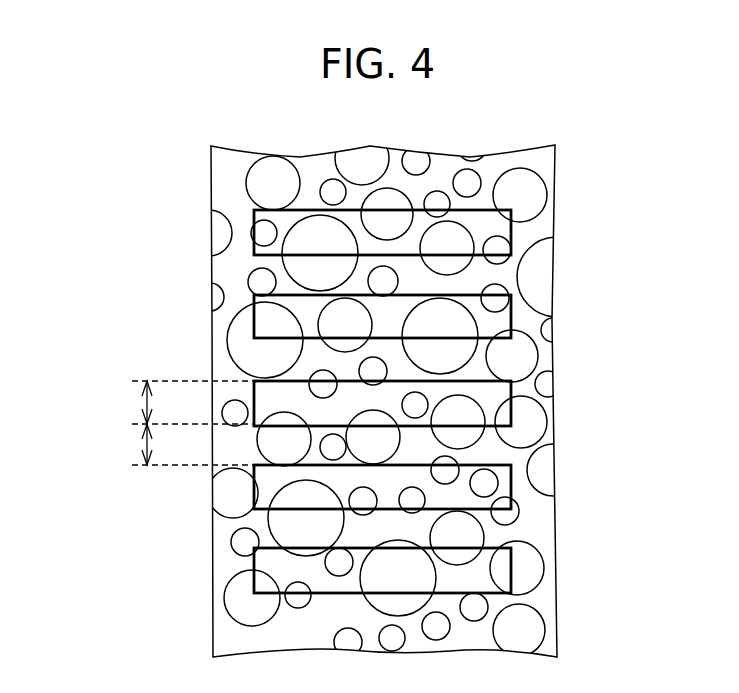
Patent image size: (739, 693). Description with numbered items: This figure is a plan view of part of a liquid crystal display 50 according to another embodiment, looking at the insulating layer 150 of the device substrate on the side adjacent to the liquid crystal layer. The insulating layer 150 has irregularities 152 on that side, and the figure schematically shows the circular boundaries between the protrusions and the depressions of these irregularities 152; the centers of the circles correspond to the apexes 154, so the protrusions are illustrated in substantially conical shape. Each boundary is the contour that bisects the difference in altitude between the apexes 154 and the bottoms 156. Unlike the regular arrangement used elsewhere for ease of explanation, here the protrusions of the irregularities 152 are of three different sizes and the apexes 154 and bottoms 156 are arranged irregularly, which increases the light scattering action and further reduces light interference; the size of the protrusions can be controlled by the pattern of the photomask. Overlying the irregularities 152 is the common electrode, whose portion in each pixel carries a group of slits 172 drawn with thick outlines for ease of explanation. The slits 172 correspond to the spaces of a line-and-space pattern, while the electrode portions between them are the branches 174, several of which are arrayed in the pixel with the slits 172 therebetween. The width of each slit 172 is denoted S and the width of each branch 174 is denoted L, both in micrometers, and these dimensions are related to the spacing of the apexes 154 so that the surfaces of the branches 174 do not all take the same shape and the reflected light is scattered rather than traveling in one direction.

The liquid crystal display 50 is at (208, 110).
The insulating layer 150 is at (232, 176).
The irregularities 152 is at (232, 176).
The apexes 154 is at (520, 196).
The bottoms 156 is at (500, 158).
The slits 172 is at (505, 409).
The branches 174 is at (495, 452).
The width of each slit S is at (143, 403).
The width of each branch L is at (140, 444).